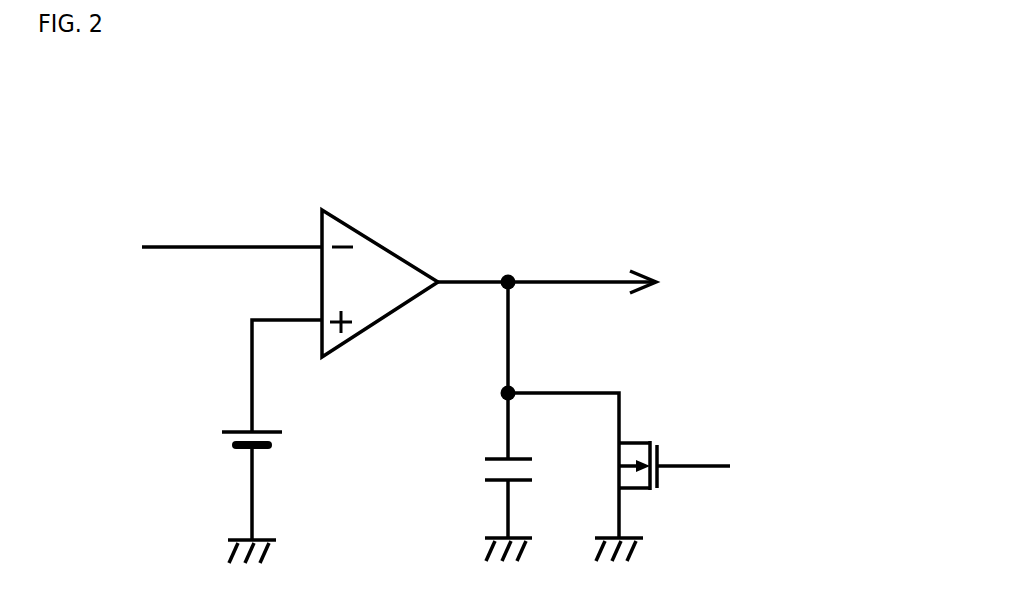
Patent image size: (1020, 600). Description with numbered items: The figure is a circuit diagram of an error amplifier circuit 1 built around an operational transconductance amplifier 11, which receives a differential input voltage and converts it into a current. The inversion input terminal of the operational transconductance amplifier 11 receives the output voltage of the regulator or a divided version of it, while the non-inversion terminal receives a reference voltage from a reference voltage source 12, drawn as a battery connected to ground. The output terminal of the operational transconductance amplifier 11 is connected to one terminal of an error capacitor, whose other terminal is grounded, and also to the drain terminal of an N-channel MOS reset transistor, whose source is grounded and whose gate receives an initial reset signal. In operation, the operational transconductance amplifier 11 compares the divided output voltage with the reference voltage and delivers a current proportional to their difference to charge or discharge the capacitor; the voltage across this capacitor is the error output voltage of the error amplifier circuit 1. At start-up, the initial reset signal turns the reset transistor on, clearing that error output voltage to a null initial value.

The error amplifier circuit 1 is at (598, 192).
The operational transconductance amplifier 11 is at (383, 247).
The reference voltage source 12 is at (282, 439).